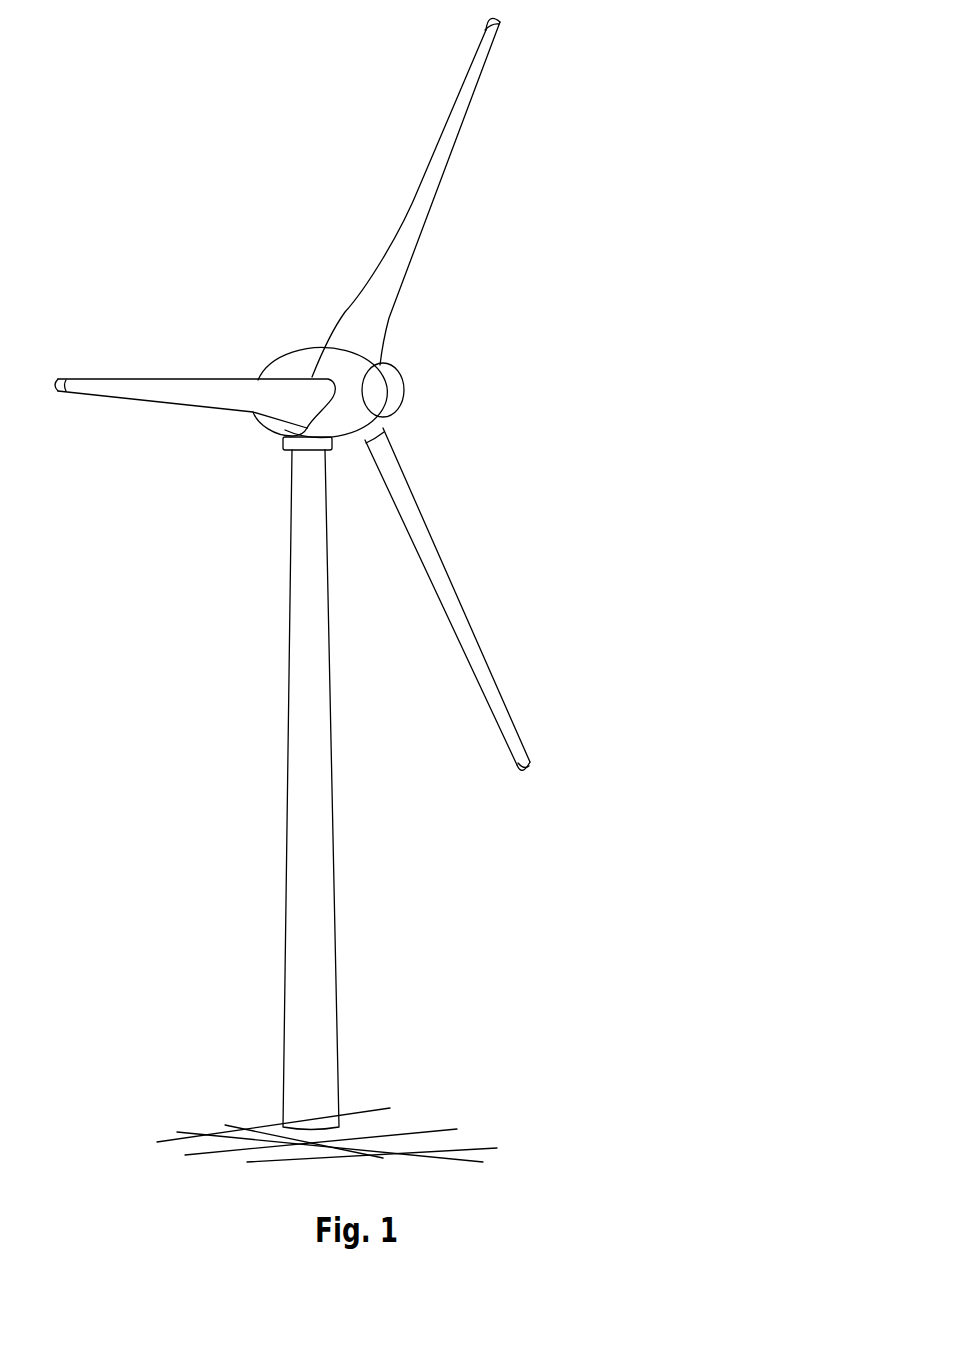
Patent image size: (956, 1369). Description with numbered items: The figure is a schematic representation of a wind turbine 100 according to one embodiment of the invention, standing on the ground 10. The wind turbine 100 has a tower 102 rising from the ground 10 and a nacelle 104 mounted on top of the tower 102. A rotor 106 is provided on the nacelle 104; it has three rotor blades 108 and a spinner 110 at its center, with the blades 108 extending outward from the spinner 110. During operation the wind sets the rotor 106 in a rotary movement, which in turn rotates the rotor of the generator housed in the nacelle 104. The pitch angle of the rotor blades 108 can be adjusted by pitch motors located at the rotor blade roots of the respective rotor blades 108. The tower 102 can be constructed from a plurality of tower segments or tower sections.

The ground 10 is at (397, 1137).
The wind turbine 100 is at (338, 573).
The tower 102 is at (315, 892).
The nacelle 104 is at (302, 365).
The rotor 106 is at (338, 394).
The rotor blades 108 is at (448, 143).
The spinner 110 is at (390, 391).